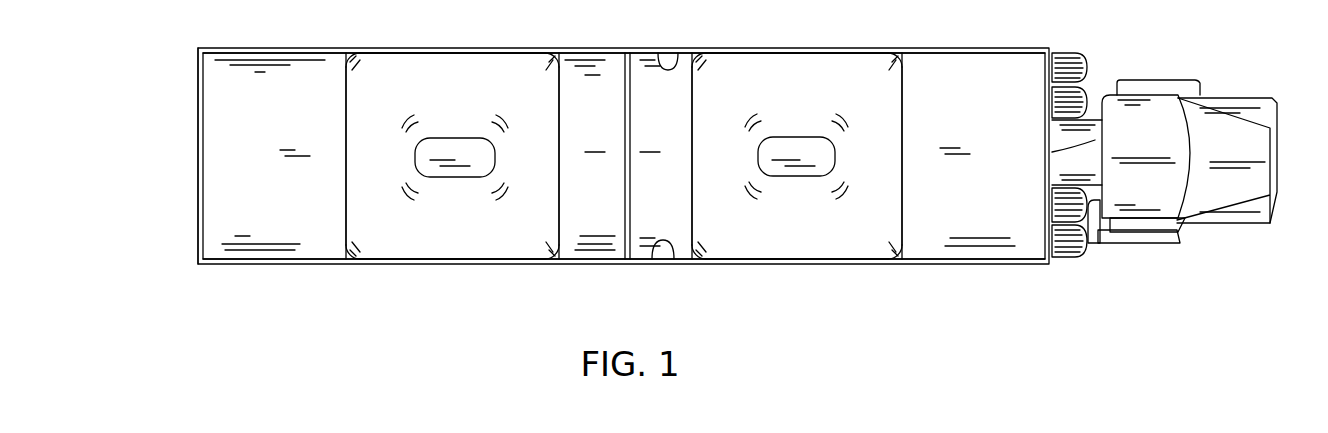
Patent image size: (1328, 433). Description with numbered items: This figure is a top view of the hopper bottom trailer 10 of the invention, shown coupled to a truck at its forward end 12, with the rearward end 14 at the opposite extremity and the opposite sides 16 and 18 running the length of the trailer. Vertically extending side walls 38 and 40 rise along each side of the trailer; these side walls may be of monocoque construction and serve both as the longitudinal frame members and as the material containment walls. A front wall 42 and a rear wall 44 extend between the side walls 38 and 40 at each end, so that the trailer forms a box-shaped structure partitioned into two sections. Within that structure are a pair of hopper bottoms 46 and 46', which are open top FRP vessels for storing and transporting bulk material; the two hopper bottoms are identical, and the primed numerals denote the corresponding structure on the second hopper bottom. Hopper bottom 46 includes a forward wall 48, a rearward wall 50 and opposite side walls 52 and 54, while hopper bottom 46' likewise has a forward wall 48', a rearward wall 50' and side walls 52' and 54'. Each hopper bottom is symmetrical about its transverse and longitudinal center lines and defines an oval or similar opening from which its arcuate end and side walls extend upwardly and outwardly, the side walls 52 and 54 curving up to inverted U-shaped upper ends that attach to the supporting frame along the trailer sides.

The hopper bottom trailer 10 is at (1038, 283).
The forward end 12 is at (1088, 52).
The rearward end 14 is at (196, 148).
The side 16 is at (578, 278).
The side 18 is at (600, 47).
The side wall 38 is at (664, 260).
The side wall 40 is at (682, 53).
The front wall 42 is at (1053, 155).
The rear wall 44 is at (196, 203).
The hopper bottom 46 is at (797, 195).
The hopper bottom 46' is at (452, 191).
The forward wall 48 is at (878, 156).
The forward wall 48' is at (536, 156).
The rearward wall 50 is at (712, 156).
The rearward wall 50' is at (365, 156).
The side wall 52 is at (797, 234).
The side wall 52' is at (452, 234).
The side wall 54 is at (797, 78).
The side wall 54' is at (452, 78).